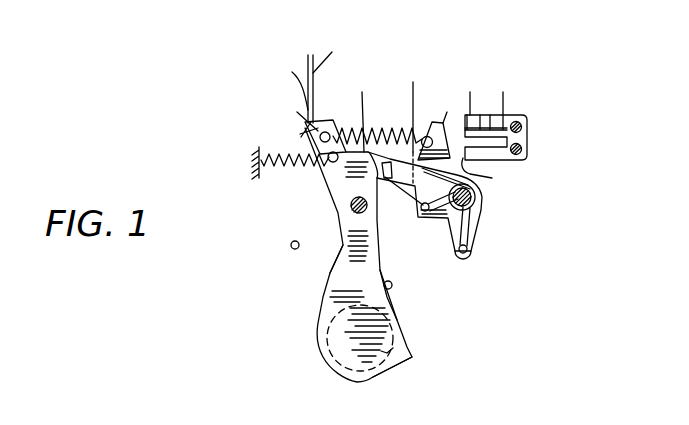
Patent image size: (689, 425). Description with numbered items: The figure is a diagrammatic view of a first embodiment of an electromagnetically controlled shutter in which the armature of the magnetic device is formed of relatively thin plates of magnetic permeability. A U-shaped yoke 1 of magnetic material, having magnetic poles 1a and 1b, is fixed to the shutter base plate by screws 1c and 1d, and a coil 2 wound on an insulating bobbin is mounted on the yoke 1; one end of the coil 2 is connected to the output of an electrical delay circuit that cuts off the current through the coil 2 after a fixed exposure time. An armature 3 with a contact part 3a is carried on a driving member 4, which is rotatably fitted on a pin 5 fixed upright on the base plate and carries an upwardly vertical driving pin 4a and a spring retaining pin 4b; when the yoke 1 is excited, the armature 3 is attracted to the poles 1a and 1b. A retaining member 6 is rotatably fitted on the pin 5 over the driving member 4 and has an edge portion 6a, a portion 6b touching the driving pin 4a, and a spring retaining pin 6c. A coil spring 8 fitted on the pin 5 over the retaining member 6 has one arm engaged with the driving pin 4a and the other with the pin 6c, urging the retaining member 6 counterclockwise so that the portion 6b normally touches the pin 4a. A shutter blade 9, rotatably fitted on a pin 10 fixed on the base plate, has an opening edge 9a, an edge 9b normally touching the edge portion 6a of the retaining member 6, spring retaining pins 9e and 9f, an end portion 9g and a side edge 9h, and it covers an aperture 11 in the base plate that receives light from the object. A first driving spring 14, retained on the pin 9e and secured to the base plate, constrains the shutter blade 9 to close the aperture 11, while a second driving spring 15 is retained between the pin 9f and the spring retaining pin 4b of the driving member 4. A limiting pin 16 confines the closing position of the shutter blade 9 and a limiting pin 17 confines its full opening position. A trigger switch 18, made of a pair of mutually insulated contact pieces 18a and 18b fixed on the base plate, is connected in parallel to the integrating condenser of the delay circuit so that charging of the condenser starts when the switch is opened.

The U-shaped yoke 1 is at (528, 137).
The magnetic pole 1a is at (490, 176).
The magnetic pole 1b is at (461, 115).
The screw 1c is at (528, 123).
The screw 1d is at (530, 148).
The coil 2 is at (473, 112).
The armature 3 is at (440, 141).
The contact part 3a is at (448, 112).
The driving member 4 is at (485, 208).
The driving pin 4a is at (422, 217).
The spring retaining pin 4b is at (427, 136).
The pin 5 is at (482, 215).
The retaining member 6 is at (477, 240).
The edge portion 6a is at (390, 180).
The portion 6b is at (414, 119).
The spring retaining pin 6c is at (464, 257).
The coil spring 8 is at (478, 197).
The shutter blade 9 is at (322, 318).
The opening edge 9a is at (395, 317).
The edge 9b is at (371, 107).
The spring retaining pin 9e is at (331, 162).
The spring retaining pin 9f is at (303, 129).
The end portion 9g is at (318, 114).
The side edge 9h is at (338, 248).
The pin 10 is at (351, 208).
The aperture 11 is at (395, 360).
The first driving spring 14 is at (260, 147).
The second driving spring 15 is at (368, 132).
The limiting pin 16 is at (392, 285).
The limiting pin 17 is at (291, 249).
The trigger switch 18 is at (313, 53).
The contact piece 18a is at (344, 51).
The contact piece 18b is at (283, 81).